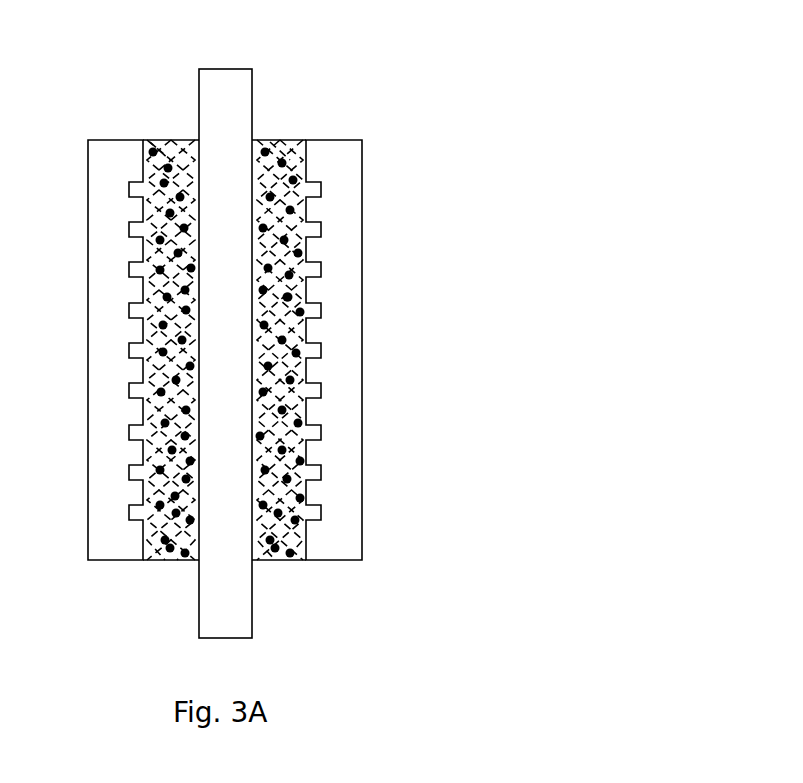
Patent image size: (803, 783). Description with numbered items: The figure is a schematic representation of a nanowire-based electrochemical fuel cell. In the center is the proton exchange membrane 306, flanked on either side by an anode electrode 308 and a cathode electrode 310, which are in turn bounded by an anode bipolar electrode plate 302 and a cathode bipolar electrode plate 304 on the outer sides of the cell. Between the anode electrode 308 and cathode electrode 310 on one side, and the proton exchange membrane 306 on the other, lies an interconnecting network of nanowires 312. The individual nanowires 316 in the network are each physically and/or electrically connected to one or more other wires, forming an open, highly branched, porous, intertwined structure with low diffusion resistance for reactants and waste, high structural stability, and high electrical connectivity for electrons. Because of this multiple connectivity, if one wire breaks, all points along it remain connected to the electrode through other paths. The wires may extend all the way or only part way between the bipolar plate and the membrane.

The anode bipolar electrode plate 302 is at (99, 557).
The cathode bipolar electrode plate 304 is at (347, 557).
The proton exchange membrane 306 is at (234, 68).
The anode electrode 308 is at (150, 553).
The cathode electrode 310 is at (300, 553).
The interconnecting network of nanowires 312 is at (167, 142).
The nanowires 316 is at (293, 294).